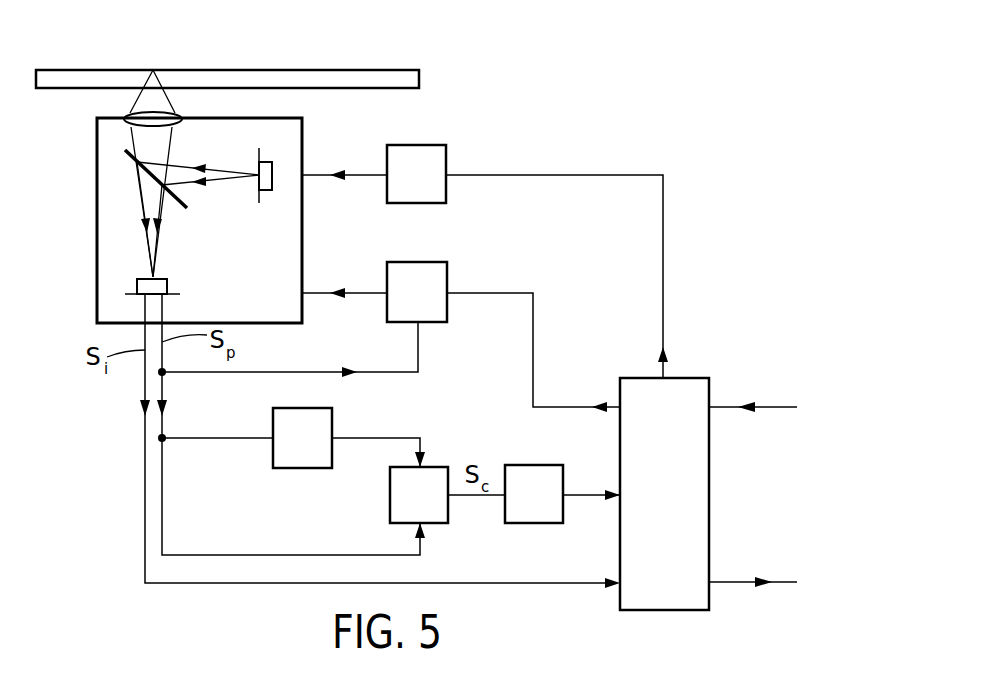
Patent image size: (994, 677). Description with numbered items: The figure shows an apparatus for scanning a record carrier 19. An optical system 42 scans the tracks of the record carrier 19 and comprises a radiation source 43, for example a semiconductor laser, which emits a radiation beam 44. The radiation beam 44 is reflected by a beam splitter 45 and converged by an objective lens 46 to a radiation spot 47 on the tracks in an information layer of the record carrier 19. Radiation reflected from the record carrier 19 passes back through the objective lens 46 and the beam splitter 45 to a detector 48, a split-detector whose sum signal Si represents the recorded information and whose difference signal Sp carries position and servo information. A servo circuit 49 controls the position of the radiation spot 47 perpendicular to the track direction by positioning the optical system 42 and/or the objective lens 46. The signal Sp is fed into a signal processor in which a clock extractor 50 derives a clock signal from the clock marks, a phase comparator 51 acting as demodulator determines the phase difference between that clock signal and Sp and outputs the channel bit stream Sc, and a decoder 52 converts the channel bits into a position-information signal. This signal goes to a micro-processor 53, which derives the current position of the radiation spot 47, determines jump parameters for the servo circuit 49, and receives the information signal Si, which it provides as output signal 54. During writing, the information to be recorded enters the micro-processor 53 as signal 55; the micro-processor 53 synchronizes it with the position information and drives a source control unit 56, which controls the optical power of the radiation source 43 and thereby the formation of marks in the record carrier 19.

The record carrier 19 is at (68, 68).
The radiation spot 47 is at (153, 70).
The objective lens 46 is at (182, 118).
The optical system 42 is at (95, 180).
The radiation source 43 is at (270, 197).
The radiation beam 44 is at (227, 183).
The beam splitter 45 is at (187, 208).
The detector 48 is at (167, 287).
The source control unit 56 is at (438, 155).
The servo circuit 49 is at (435, 277).
The clock extractor 50 is at (295, 472).
The phase comparator 51 is at (440, 515).
The decoder 52 is at (527, 473).
The micro-processor 53 is at (687, 387).
The signal 55 is at (770, 408).
The output signal 54 is at (780, 578).